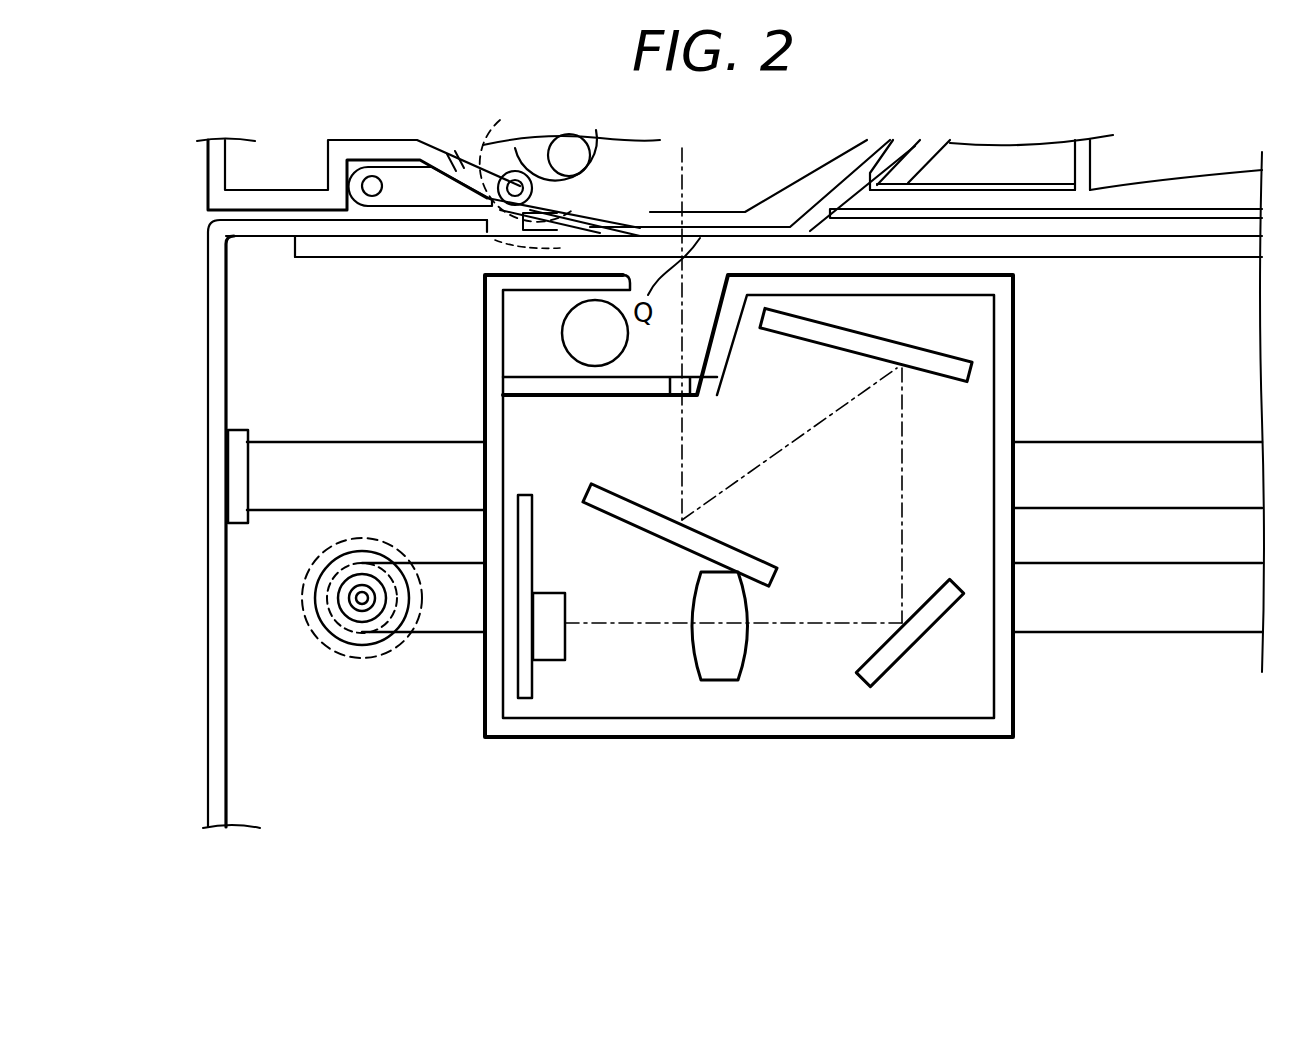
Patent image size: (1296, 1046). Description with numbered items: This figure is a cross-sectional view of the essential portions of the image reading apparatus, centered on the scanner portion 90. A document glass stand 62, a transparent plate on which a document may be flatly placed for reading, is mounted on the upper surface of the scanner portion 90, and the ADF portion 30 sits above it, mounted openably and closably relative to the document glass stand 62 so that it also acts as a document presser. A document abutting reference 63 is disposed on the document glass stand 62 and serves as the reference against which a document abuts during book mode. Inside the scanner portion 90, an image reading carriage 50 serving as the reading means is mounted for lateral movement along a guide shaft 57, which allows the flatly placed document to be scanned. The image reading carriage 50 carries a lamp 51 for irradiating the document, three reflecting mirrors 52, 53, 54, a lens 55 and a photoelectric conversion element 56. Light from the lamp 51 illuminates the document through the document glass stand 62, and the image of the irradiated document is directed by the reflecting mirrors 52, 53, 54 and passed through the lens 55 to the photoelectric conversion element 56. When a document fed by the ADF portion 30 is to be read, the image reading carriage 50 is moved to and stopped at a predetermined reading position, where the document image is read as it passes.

The ADF portion 30 is at (203, 178).
The scanner portion 90 is at (203, 338).
The document glass stand 62 is at (443, 252).
The document abutting reference 63 is at (507, 238).
The lamp 51 is at (570, 332).
The guide shaft 57 is at (397, 455).
The image reading carriage 50 is at (1008, 678).
The reflecting mirror 53 is at (852, 338).
The reflecting mirror 52 is at (767, 573).
The reflecting mirror 54 is at (930, 620).
The lens 55 is at (720, 682).
The photoelectric conversion element 56 is at (552, 642).